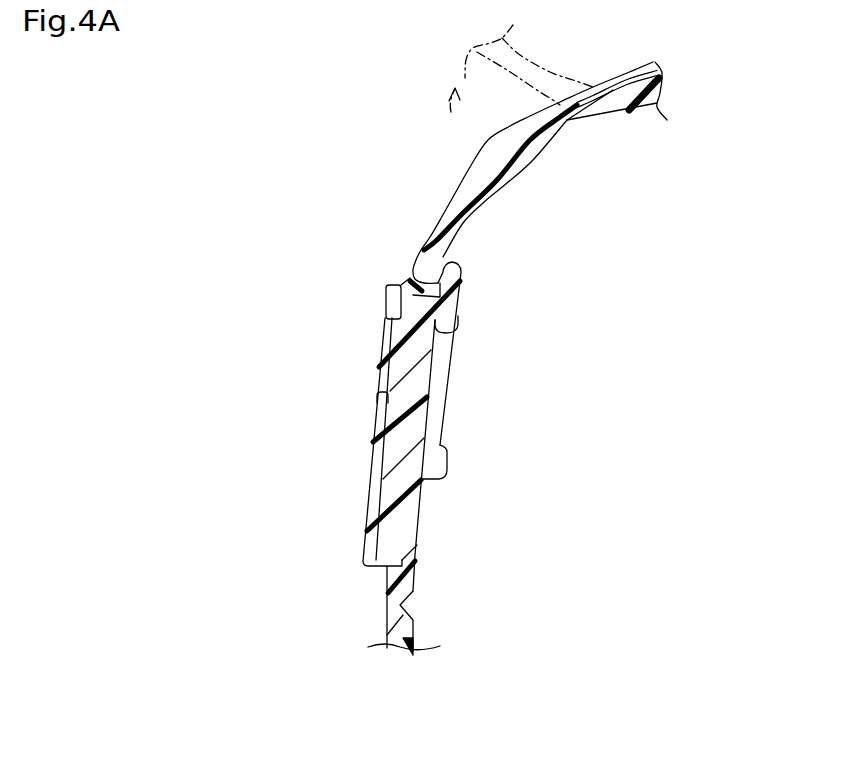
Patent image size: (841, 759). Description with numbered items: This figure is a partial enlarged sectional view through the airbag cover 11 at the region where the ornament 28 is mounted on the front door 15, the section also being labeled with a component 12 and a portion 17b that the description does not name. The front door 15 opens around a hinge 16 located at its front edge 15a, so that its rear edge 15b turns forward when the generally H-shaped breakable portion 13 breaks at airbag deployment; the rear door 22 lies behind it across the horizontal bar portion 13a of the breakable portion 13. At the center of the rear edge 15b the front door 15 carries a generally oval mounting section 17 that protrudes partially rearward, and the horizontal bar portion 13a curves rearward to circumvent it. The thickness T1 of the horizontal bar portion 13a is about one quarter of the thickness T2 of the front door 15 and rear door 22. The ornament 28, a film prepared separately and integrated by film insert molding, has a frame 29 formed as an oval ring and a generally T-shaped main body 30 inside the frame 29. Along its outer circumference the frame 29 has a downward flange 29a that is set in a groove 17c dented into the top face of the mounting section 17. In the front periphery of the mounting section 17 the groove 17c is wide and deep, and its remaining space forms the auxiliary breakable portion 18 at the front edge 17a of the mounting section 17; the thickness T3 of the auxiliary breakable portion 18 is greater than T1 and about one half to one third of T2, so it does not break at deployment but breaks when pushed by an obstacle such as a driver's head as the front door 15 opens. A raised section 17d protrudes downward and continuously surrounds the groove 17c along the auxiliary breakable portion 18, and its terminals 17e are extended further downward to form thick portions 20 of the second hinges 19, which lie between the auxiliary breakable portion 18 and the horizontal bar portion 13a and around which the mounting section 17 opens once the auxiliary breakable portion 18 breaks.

The front door 15 is at (431, 163).
The front edge 15a is at (567, 122).
The rear edge 15b is at (386, 591).
The hinge 16 is at (594, 118).
The airbag cover 11 is at (672, 163).
The door 12 is at (641, 122).
The mounting section 17 is at (440, 426).
The front edge of the mounting section 17a is at (460, 324).
The lower portion of molding 17b is at (421, 551).
The groove 17c is at (526, 281).
The raised section 17d is at (448, 398).
The terminals of the raised section 17e is at (450, 463).
The auxiliary breakable portion 18 is at (463, 275).
The second hinges 19 is at (376, 475).
The thick portion 20 is at (527, 451).
The rear door 22 is at (414, 633).
The ornament 28 is at (383, 296).
The frame 29 is at (384, 310).
The flange 29a is at (410, 277).
The main body 30 is at (370, 530).
The breakable portion 13 is at (384, 636).
The horizontal bar portion 13a is at (334, 627).
The thickness of the horizontal bar portion T1 is at (360, 693).
The thickness of the front door T2 is at (360, 580).
The thickness of the auxiliary breakable portion T3 is at (433, 240).